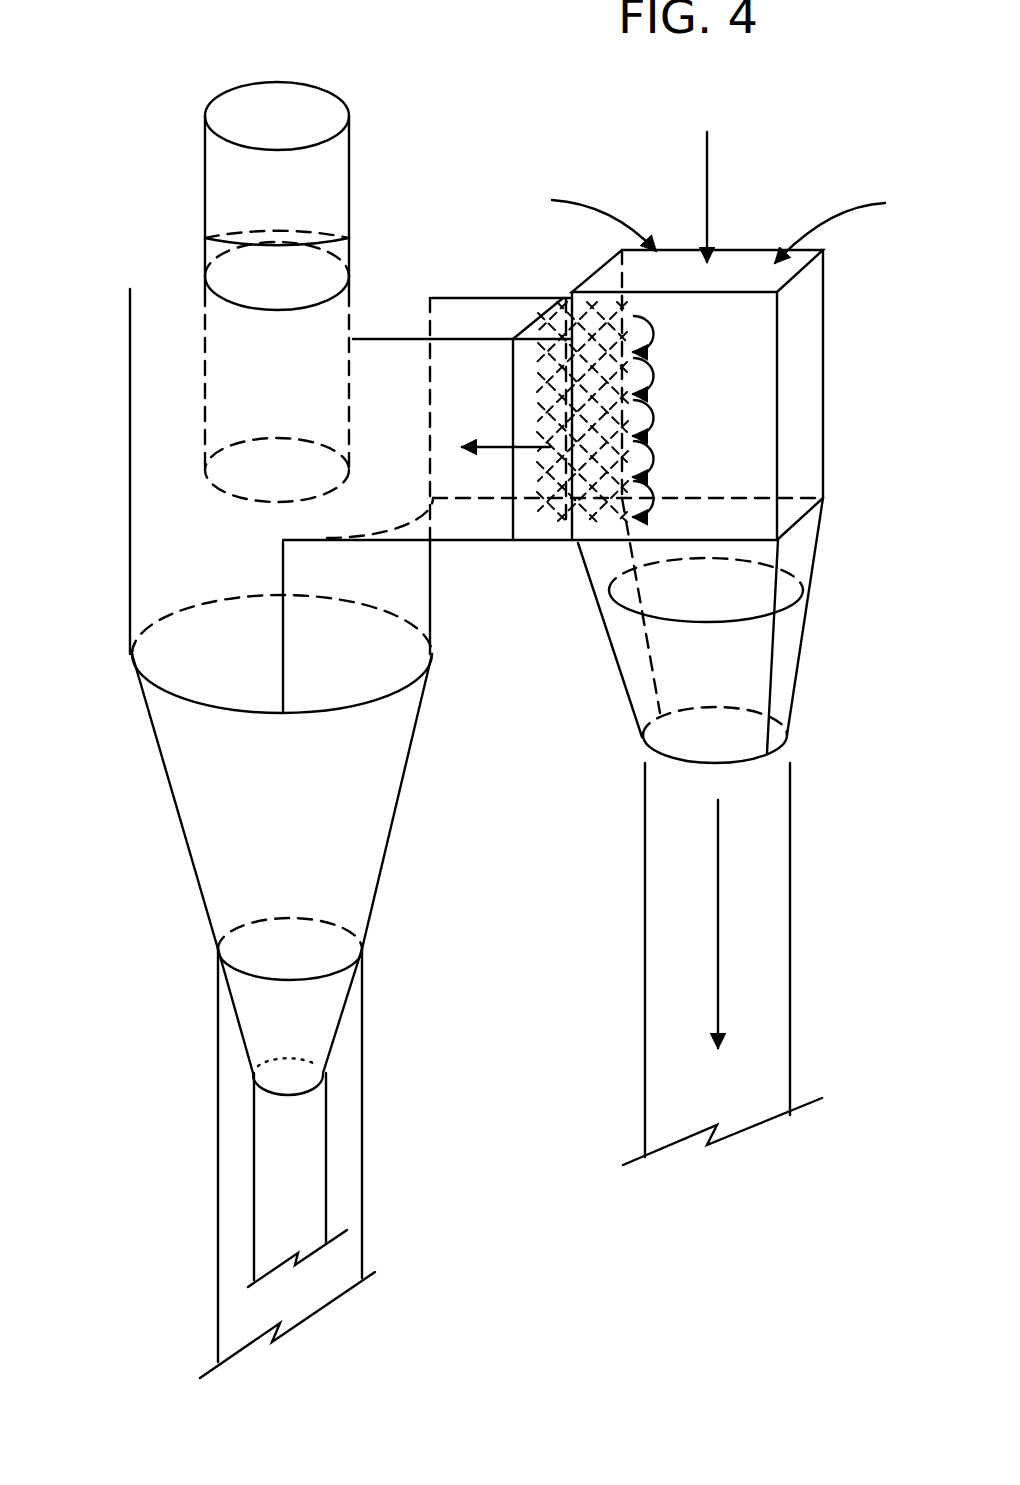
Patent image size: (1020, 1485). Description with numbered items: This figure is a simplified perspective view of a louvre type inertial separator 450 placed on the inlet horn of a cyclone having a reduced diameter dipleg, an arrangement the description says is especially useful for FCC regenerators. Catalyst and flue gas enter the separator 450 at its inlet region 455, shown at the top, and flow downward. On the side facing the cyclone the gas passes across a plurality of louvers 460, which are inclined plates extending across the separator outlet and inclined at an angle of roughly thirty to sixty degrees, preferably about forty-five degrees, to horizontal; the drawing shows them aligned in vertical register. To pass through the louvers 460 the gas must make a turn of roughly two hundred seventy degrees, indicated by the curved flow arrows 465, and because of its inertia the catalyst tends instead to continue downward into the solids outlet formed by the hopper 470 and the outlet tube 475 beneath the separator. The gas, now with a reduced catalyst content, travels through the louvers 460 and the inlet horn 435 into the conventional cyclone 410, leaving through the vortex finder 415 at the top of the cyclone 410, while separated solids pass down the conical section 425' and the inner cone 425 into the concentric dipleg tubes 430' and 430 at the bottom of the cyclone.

The cyclone separator body 410 is at (132, 472).
The vortex finder outlet tube 415 is at (205, 170).
The inner conical section 425 is at (246, 1022).
The conical section 425' is at (305, 817).
The inner discharge pipe 430 is at (343, 1180).
The outer discharge pipe 430' is at (337, 1163).
The inlet duct 435 is at (470, 297).
The separator 450 is at (824, 370).
The inlet region 455 is at (742, 255).
The louvers 460 is at (576, 527).
The filter flow passages 465 is at (538, 533).
The hopper 470 is at (738, 675).
The discharge pipe 475 is at (792, 915).